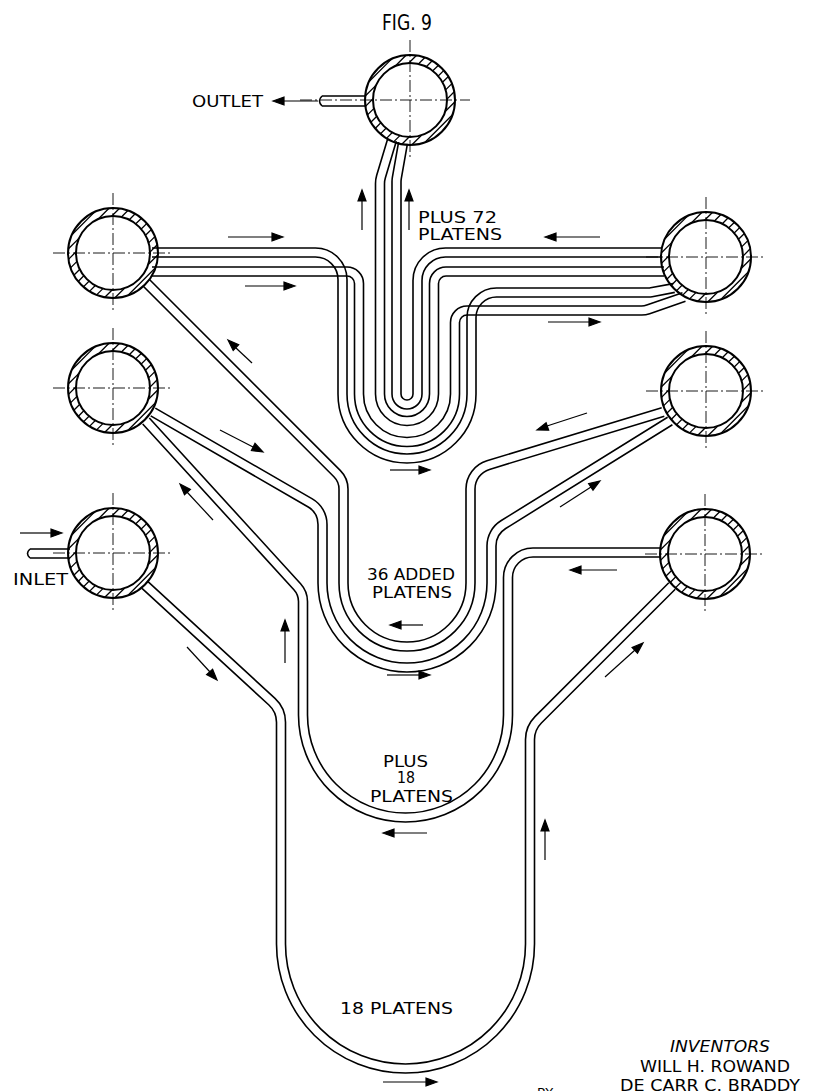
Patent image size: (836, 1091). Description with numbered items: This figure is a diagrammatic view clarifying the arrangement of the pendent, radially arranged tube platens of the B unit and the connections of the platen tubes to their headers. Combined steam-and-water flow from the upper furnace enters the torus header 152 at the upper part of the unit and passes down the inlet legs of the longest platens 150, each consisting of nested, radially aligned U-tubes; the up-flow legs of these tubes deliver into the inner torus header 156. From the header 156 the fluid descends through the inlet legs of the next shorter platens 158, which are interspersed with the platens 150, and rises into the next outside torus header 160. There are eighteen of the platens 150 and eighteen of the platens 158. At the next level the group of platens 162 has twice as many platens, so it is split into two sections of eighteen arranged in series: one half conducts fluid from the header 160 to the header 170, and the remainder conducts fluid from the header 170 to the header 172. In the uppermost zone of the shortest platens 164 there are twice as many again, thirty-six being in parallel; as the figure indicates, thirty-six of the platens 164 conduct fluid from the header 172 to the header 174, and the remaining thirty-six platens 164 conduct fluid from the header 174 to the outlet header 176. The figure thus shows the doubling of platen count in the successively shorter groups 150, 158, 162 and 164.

The longest platens 150 is at (279, 952).
The torus header 152 is at (89, 514).
The inner torus header 156 is at (729, 516).
The next shorter platens 158 is at (503, 741).
The outside torus header 160 is at (92, 344).
The platens 162 is at (466, 545).
The shortest platens 164 is at (477, 390).
The header 170 is at (734, 354).
The header 172 is at (91, 208).
The header 174 is at (731, 217).
The outlet header 176 is at (448, 130).